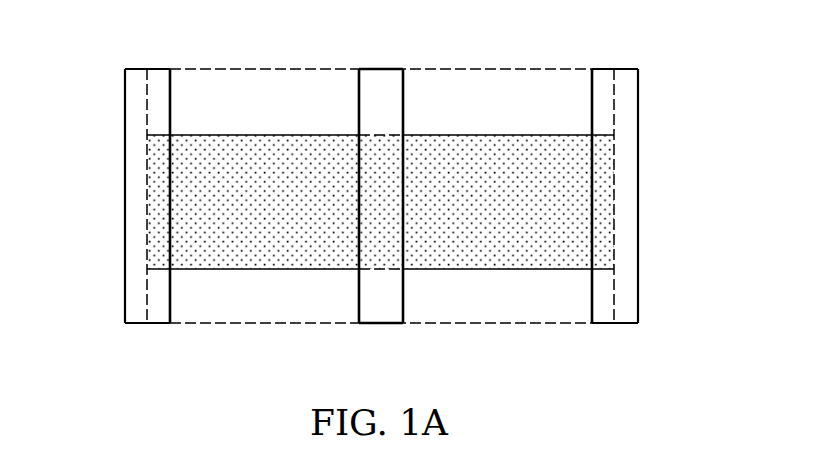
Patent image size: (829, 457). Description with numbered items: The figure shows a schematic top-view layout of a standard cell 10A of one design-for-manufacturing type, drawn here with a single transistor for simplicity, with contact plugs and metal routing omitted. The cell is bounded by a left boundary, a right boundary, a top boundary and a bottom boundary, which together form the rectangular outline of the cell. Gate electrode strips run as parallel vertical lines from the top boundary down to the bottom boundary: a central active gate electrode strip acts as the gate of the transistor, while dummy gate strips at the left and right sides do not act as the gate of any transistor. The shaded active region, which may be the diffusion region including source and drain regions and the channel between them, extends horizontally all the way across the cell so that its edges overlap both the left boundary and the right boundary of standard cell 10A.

The standard cell 10A is at (392, 193).